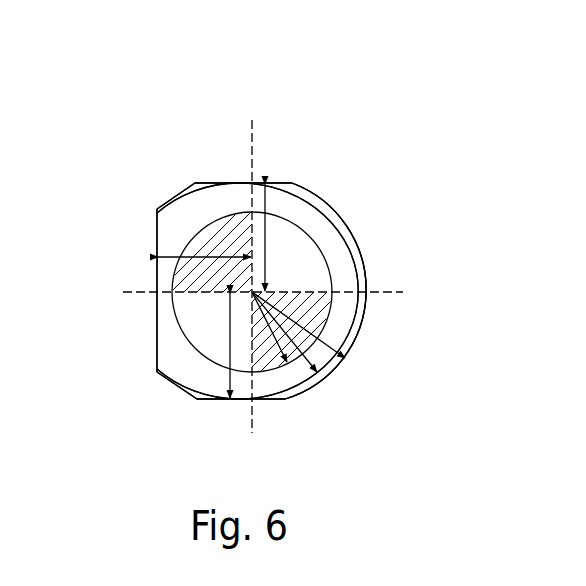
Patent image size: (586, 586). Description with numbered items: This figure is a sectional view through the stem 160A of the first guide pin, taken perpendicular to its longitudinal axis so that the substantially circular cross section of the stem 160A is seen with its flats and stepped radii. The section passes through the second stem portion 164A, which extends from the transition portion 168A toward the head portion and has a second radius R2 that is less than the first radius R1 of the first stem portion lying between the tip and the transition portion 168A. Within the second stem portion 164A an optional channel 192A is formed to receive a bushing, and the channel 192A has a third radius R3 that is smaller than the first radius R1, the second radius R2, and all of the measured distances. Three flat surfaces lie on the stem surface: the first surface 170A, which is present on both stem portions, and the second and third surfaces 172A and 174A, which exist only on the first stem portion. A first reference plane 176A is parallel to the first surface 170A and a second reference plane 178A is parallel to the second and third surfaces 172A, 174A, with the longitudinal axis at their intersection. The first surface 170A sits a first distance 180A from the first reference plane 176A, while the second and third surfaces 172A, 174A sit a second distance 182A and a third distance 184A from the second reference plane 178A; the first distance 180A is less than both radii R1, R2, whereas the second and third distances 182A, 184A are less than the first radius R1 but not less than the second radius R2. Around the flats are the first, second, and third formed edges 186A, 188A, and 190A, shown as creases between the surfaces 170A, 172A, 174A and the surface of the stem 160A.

The stem 160A is at (356, 101).
The second stem portion 164A is at (379, 242).
The transition portion 168A is at (343, 223).
The first surface 170A is at (157, 340).
The second surface 172A is at (260, 399).
The third surface 174A is at (272, 182).
The first reference plane 176A is at (252, 145).
The second reference plane 178A is at (137, 292).
The first distance 180A is at (208, 257).
The second distance 182A is at (222, 382).
The third distance 184A is at (285, 222).
The first formed edge 186A is at (157, 210).
The second formed edge 188A is at (200, 399).
The third formed edge 190A is at (294, 183).
The channel 192A is at (358, 303).
The first radius R1 is at (345, 352).
The second radius R2 is at (305, 366).
The third radius R3 is at (276, 398).